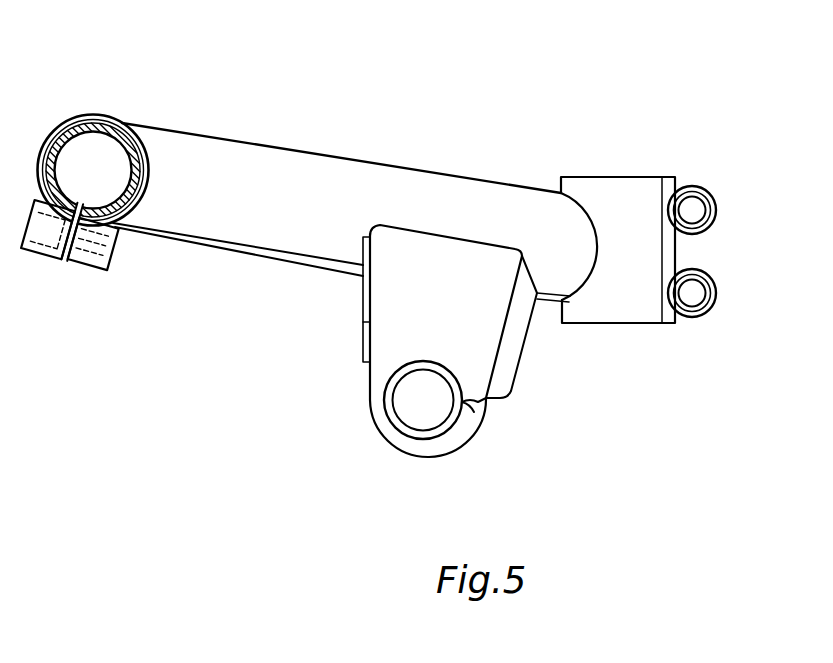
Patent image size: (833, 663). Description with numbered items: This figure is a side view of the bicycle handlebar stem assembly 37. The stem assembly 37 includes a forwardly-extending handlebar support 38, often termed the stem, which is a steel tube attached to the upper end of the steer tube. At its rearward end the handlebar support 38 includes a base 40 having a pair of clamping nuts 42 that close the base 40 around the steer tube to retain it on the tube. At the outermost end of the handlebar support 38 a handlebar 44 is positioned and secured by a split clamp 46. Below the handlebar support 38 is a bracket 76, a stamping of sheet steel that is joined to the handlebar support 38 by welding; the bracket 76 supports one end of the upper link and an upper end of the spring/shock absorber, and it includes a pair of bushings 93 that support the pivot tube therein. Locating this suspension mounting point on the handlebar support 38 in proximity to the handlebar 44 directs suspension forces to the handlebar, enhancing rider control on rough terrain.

The stem assembly 37 is at (275, 146).
The handlebar support 38 is at (492, 180).
The base 40 is at (600, 192).
The clamping nuts 42 is at (697, 210).
The handlebar 44 is at (95, 124).
The split clamp 46 is at (50, 262).
The bracket 76 is at (485, 335).
The bushings 93 is at (483, 404).